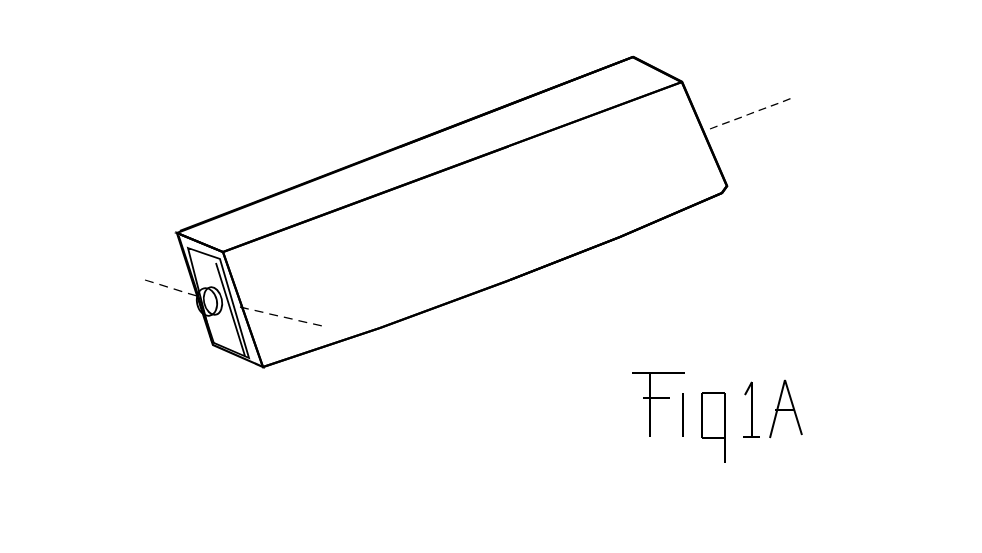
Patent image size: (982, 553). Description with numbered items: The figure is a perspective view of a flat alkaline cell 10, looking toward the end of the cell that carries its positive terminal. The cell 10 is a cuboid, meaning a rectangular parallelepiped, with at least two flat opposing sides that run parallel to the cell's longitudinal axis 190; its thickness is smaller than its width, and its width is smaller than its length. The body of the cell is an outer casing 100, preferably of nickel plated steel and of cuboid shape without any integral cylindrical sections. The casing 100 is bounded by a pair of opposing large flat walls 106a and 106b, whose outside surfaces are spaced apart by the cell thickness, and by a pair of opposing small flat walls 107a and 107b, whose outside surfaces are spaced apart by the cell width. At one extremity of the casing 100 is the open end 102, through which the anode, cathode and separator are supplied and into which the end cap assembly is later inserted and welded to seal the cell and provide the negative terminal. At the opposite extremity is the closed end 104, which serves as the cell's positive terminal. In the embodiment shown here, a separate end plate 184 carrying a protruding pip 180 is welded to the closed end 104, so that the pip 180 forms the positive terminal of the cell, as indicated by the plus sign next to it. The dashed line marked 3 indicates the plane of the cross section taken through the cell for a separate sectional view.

The flat alkaline cell 10 is at (230, 167).
The casing 100 is at (454, 122).
The open end 102 is at (718, 157).
The closed end 104 is at (243, 362).
The large flat wall 106a is at (403, 305).
The large flat wall 106b is at (307, 177).
The small flat wall 107a is at (572, 98).
The small flat wall 107b is at (637, 230).
The pip 180 is at (202, 319).
The end plate 184 is at (217, 336).
The longitudinal axis 190 is at (770, 105).
The section line 3- 3 is at (145, 280).